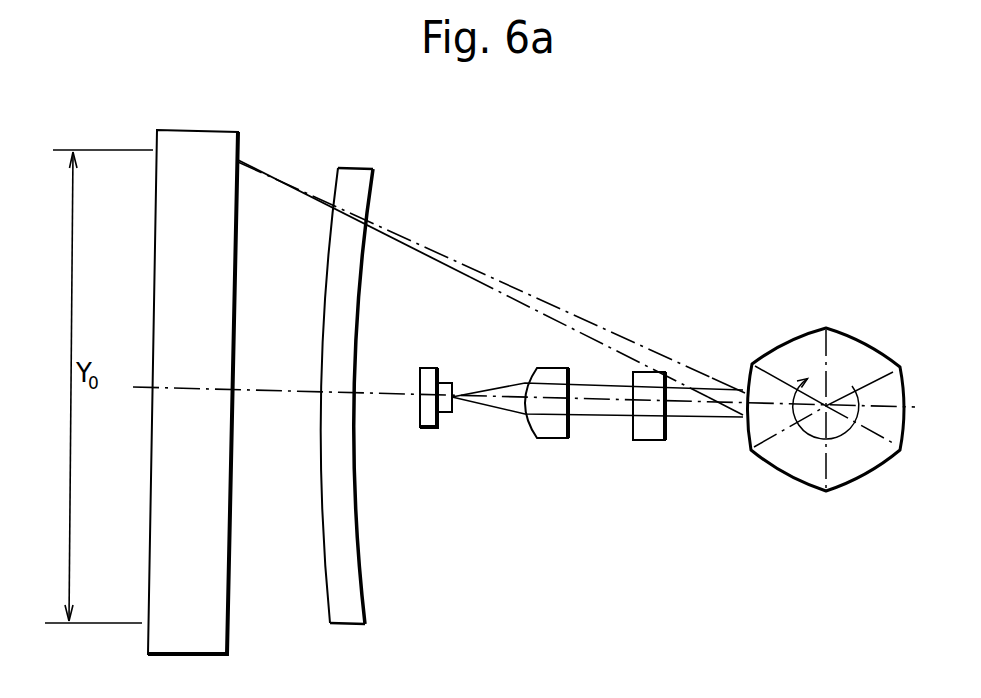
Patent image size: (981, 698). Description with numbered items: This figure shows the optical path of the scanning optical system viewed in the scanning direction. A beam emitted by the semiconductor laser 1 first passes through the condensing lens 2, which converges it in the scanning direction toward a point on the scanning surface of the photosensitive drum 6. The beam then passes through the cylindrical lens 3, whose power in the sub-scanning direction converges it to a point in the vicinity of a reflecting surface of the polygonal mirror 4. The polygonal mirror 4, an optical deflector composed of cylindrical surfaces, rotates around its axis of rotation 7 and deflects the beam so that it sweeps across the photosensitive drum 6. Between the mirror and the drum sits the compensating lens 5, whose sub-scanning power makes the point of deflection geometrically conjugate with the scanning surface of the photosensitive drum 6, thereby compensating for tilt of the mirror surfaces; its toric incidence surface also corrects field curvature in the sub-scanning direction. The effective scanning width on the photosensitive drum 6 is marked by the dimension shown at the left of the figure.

The semiconductor laser 1 is at (422, 381).
The condensing lens 2 is at (545, 428).
The cylindrical lens 3 is at (650, 430).
The polygonal mirror 4 is at (786, 351).
The compensating lens 5 is at (362, 182).
The photosensitive drum 6 is at (204, 147).
The axis of rotation 7 is at (834, 392).